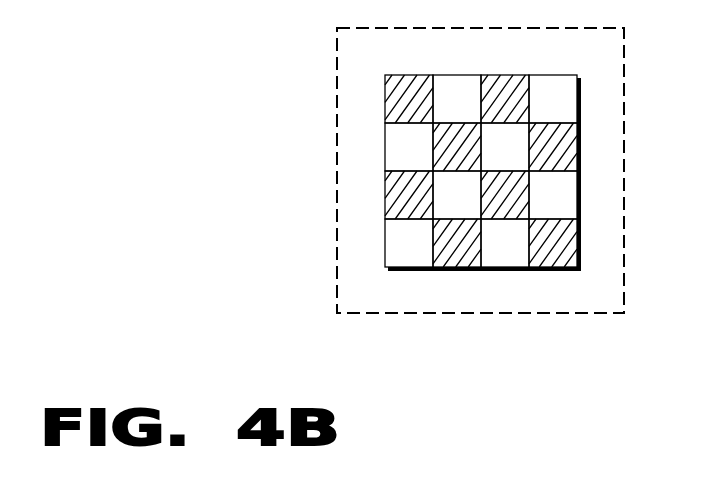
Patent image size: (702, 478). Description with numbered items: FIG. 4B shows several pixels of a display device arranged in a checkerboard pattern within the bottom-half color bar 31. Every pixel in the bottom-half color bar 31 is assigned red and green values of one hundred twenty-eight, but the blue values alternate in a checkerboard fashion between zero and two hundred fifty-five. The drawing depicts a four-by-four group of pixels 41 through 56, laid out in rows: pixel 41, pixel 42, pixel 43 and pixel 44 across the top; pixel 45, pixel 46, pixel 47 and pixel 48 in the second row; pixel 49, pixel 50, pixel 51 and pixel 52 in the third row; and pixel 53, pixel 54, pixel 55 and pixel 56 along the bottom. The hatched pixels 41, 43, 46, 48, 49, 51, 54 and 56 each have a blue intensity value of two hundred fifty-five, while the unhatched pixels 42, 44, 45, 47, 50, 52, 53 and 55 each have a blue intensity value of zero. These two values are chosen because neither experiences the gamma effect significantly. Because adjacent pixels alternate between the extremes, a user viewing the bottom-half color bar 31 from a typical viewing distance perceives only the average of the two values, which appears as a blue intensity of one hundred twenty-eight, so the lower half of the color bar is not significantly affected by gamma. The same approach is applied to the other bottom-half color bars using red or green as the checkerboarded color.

The bottom-half color bar 31 is at (618, 306).
The pixel 41 is at (409, 99).
The pixel 42 is at (457, 99).
The pixel 43 is at (505, 99).
The pixel 44 is at (553, 99).
The pixel 45 is at (409, 147).
The pixel 46 is at (457, 147).
The pixel 47 is at (505, 147).
The pixel 48 is at (553, 147).
The pixel 49 is at (409, 195).
The pixel 50 is at (457, 195).
The pixel 51 is at (505, 195).
The pixel 52 is at (553, 195).
The pixel 53 is at (409, 243).
The pixel 54 is at (457, 243).
The pixel 55 is at (505, 243).
The pixel 56 is at (553, 243).